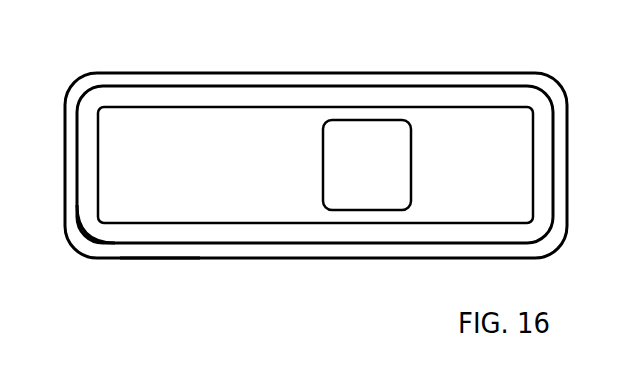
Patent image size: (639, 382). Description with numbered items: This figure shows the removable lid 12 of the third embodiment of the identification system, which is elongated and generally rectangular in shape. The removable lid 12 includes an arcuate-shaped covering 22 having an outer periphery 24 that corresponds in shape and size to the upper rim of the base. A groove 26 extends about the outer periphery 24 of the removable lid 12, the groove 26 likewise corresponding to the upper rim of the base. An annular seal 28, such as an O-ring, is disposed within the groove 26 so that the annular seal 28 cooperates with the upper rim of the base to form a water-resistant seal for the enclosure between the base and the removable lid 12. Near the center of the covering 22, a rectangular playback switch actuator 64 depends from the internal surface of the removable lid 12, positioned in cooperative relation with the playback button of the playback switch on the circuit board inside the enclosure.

The removable lid 12 is at (466, 120).
The arcuate-shaped covering 22 is at (522, 148).
The outer periphery 24 is at (147, 252).
The groove 26 is at (543, 192).
The annular seal 28 is at (105, 235).
The playback switch actuator 64 is at (359, 195).